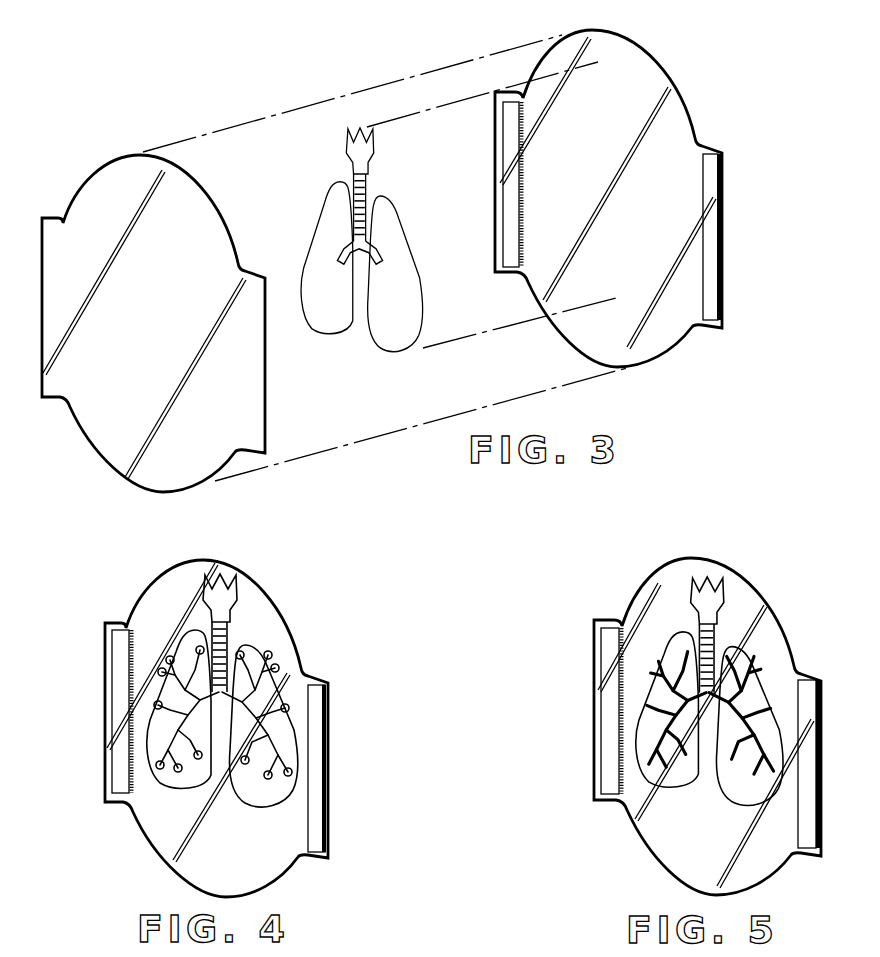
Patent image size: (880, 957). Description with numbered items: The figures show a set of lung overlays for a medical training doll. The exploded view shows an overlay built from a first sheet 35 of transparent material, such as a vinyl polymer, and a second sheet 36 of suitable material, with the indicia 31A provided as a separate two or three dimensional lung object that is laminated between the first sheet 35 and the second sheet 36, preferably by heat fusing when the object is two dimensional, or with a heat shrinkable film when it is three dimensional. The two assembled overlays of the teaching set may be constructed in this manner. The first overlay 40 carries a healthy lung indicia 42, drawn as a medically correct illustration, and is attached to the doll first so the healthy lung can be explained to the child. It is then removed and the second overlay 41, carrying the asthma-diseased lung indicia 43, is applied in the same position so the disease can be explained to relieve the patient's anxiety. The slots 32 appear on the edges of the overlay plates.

In FIG. 3, the second sheet 36 is at (117, 158).
In FIG. 3, the first sheet 35 is at (667, 68).
In FIG. 3, the indicia 31A is at (383, 348).
In FIG. 4, the second overlay 41 is at (278, 592).
In FIG. 4, the slots 32 is at (120, 677).
In FIG. 4, the diseased lung indicia 43 is at (270, 683).
In FIG. 5, the first overlay 40 is at (755, 569).
In FIG. 5, the healthy lung indicia 42 is at (755, 667).